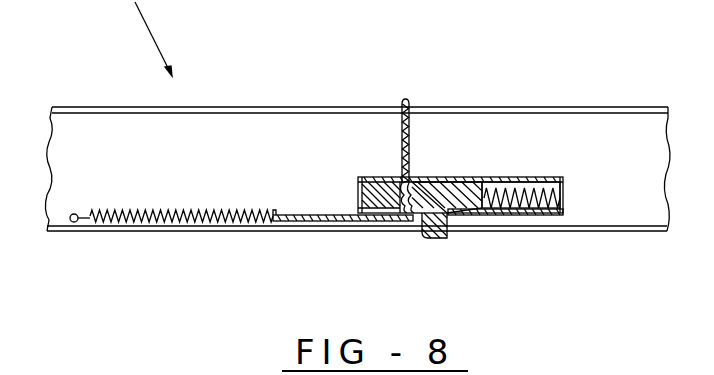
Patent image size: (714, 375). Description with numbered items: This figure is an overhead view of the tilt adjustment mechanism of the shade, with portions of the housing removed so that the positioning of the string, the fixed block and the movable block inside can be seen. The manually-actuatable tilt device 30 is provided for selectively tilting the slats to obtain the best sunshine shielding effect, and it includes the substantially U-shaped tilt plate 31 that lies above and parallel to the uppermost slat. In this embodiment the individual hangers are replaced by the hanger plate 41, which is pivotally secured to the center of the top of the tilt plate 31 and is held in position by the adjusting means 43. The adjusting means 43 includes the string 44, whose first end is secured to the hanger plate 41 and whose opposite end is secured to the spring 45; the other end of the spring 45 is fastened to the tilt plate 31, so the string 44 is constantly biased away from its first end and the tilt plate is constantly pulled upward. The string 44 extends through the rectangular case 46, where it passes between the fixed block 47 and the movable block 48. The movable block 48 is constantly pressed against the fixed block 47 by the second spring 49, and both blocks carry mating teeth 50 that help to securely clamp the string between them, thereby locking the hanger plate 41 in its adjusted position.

The tilt device 30 is at (140, 38).
The tilt plate 31 is at (75, 192).
The hanger plate 41 is at (270, 110).
The adjusting means 43 is at (432, 160).
The string 44 is at (407, 128).
The spring 45 is at (157, 217).
The rectangular case 46 is at (515, 215).
The fixed block 47 is at (362, 182).
The movable block 48 is at (468, 190).
The second spring 49 is at (528, 193).
The mating teeth 50 is at (412, 212).